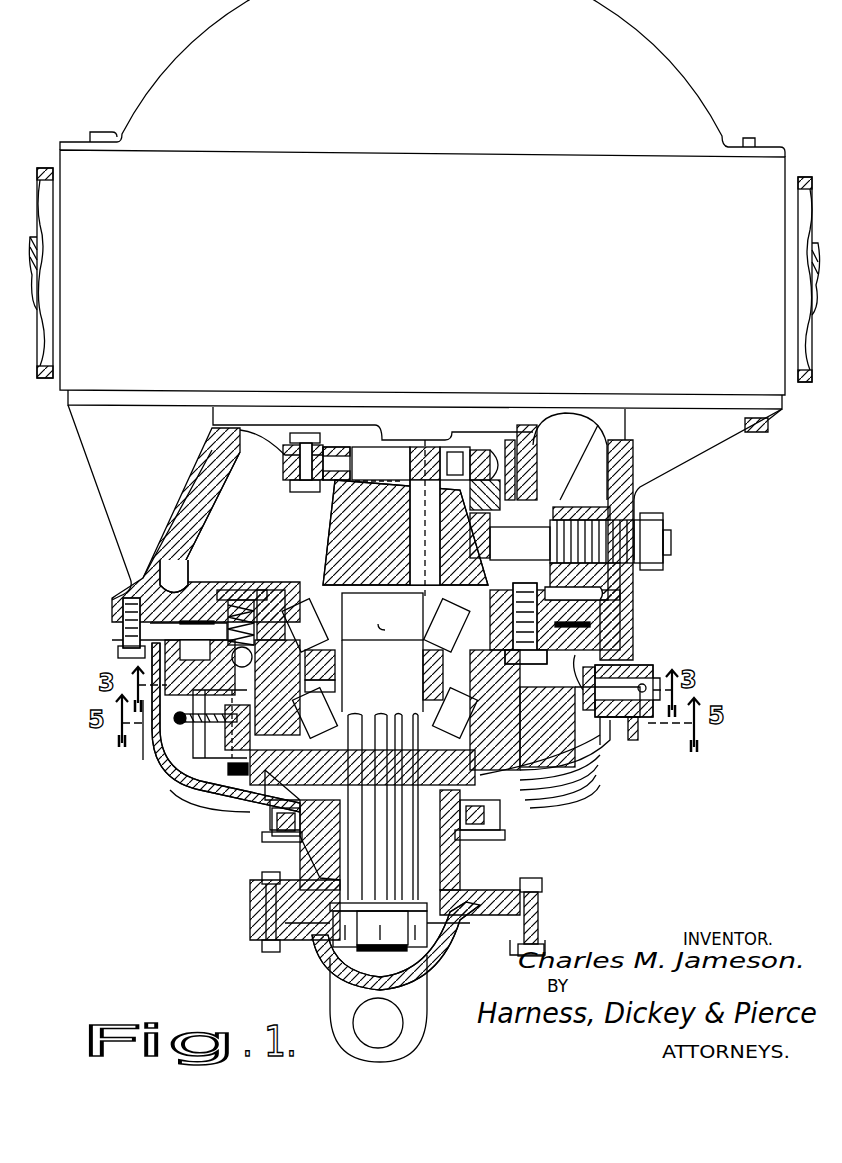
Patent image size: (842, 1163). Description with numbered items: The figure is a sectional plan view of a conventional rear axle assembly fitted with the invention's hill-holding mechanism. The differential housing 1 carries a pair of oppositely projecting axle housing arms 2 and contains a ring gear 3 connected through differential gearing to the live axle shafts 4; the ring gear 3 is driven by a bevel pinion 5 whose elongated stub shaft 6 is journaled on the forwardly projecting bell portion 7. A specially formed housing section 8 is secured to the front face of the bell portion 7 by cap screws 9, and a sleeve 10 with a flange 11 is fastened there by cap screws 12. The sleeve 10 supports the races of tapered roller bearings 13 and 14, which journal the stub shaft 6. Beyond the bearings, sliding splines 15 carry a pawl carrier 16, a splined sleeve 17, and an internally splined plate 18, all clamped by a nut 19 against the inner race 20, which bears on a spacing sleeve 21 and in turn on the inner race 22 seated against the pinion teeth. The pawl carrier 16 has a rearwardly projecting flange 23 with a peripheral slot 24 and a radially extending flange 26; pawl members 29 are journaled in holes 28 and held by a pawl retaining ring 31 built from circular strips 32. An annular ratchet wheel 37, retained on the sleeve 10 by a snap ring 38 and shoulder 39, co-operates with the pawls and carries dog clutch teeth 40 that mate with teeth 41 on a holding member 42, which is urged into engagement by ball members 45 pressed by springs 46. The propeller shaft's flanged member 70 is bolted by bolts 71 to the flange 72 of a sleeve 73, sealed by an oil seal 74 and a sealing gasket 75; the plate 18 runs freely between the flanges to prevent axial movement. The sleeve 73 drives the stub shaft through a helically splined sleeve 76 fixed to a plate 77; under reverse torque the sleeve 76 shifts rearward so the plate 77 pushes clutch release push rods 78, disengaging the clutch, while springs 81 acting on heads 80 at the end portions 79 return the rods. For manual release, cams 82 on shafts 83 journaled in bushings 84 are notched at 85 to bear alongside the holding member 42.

The differential housing 1 is at (675, 170).
The axle housing arms 2 is at (46, 166).
The ring gear 3 is at (510, 500).
The live axle shafts 4 is at (50, 283).
The bevel pinion 5 is at (342, 530).
The stub shaft 6 is at (384, 621).
The bell portion 7 is at (175, 507).
The housing section 8 is at (157, 765).
The cap screws 9 is at (118, 652).
The sleeve 10 is at (300, 668).
The flange 11 is at (185, 595).
The cap screws 12 is at (513, 592).
The tapered roller bearing 13 is at (305, 605).
The tapered roller bearing 14 is at (322, 710).
The sliding splines 15 is at (395, 730).
The pawl carrier 16 is at (285, 800).
The splined sleeve 17 is at (330, 840).
The internally splined plate 18 is at (300, 880).
The nut 19 is at (325, 945).
The inner race 20 is at (418, 690).
The spacing sleeve 21 is at (348, 650).
The inner race 22 is at (420, 602).
The rearwardly projecting flange 23 is at (210, 692).
The peripheral slot 24 is at (212, 742).
The radially extending flange 26 is at (270, 805).
The hole 28 is at (595, 745).
The pawl member 29 is at (190, 805).
The pawl retaining ring 31 is at (148, 735).
The circular strips 32 is at (202, 709).
The ratchet wheel 37 is at (230, 768).
The snap ring 38 is at (495, 812).
The shoulder 39 is at (478, 690).
The dog clutch teeth 40 is at (225, 724).
The dog clutch teeth 41 is at (300, 683).
The holding member 42 is at (240, 672).
The ball members 45 is at (252, 657).
The spring 46 is at (238, 600).
The flanged member 70 is at (478, 935).
The bolts 71 is at (500, 918).
The flange 72 is at (510, 900).
The sleeve 73 is at (455, 870).
The oil seal 74 is at (498, 836).
The sealing gasket 75 is at (262, 922).
The splined sleeve 76 is at (470, 886).
The plate 77 is at (580, 790).
The clutch release push rods 78 is at (590, 762).
The forwardly projecting end portion 79 is at (588, 778).
The head 80 is at (570, 806).
The spring 81 is at (590, 792).
The cam 82 is at (605, 668).
The shaft 83 is at (620, 668).
The bushing 84 is at (633, 738).
The notch 85 is at (595, 655).